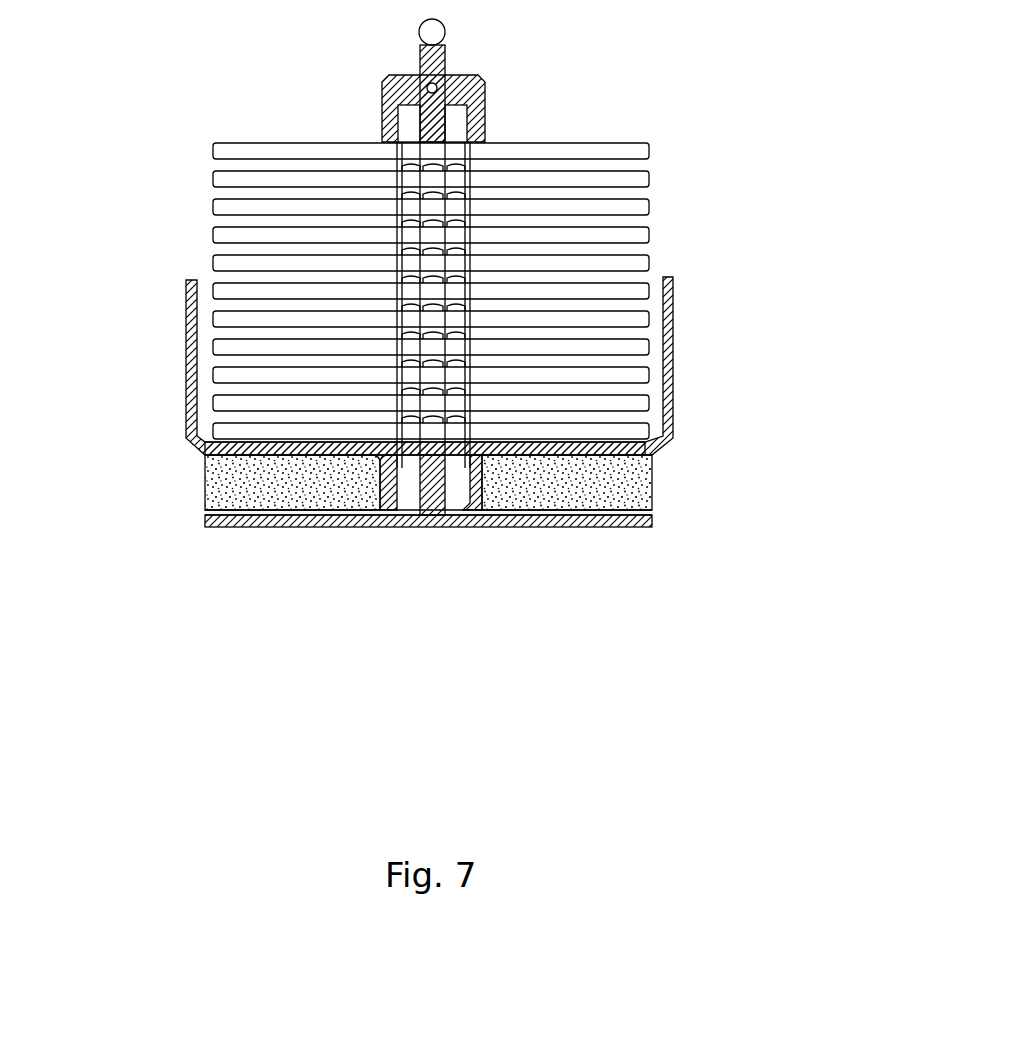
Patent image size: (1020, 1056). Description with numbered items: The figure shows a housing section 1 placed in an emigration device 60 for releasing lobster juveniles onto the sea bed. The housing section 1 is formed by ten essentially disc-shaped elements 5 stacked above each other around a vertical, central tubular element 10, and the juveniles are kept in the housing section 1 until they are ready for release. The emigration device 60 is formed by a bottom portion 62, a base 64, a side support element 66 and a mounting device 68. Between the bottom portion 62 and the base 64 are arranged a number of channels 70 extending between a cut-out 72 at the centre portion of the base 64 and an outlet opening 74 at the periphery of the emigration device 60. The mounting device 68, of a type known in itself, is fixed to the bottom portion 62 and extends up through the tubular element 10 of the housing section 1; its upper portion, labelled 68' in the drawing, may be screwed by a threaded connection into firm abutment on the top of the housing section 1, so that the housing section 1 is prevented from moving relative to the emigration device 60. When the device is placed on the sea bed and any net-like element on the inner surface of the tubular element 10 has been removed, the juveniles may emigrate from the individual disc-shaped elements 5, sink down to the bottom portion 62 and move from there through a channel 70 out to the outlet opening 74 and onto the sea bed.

The housing section 1 is at (678, 193).
The disc-shaped element 5 is at (214, 207).
The tubular element 10 is at (452, 457).
The emigration device 60 is at (180, 528).
The bottom portion 62 is at (243, 528).
The base 64 is at (613, 492).
The side support element 66 is at (190, 320).
The mounting device 68 is at (411, 354).
The cap nut 68' is at (552, 90).
The channel 70 is at (548, 515).
The cut-out 72 is at (380, 525).
The outlet opening 74 is at (660, 511).